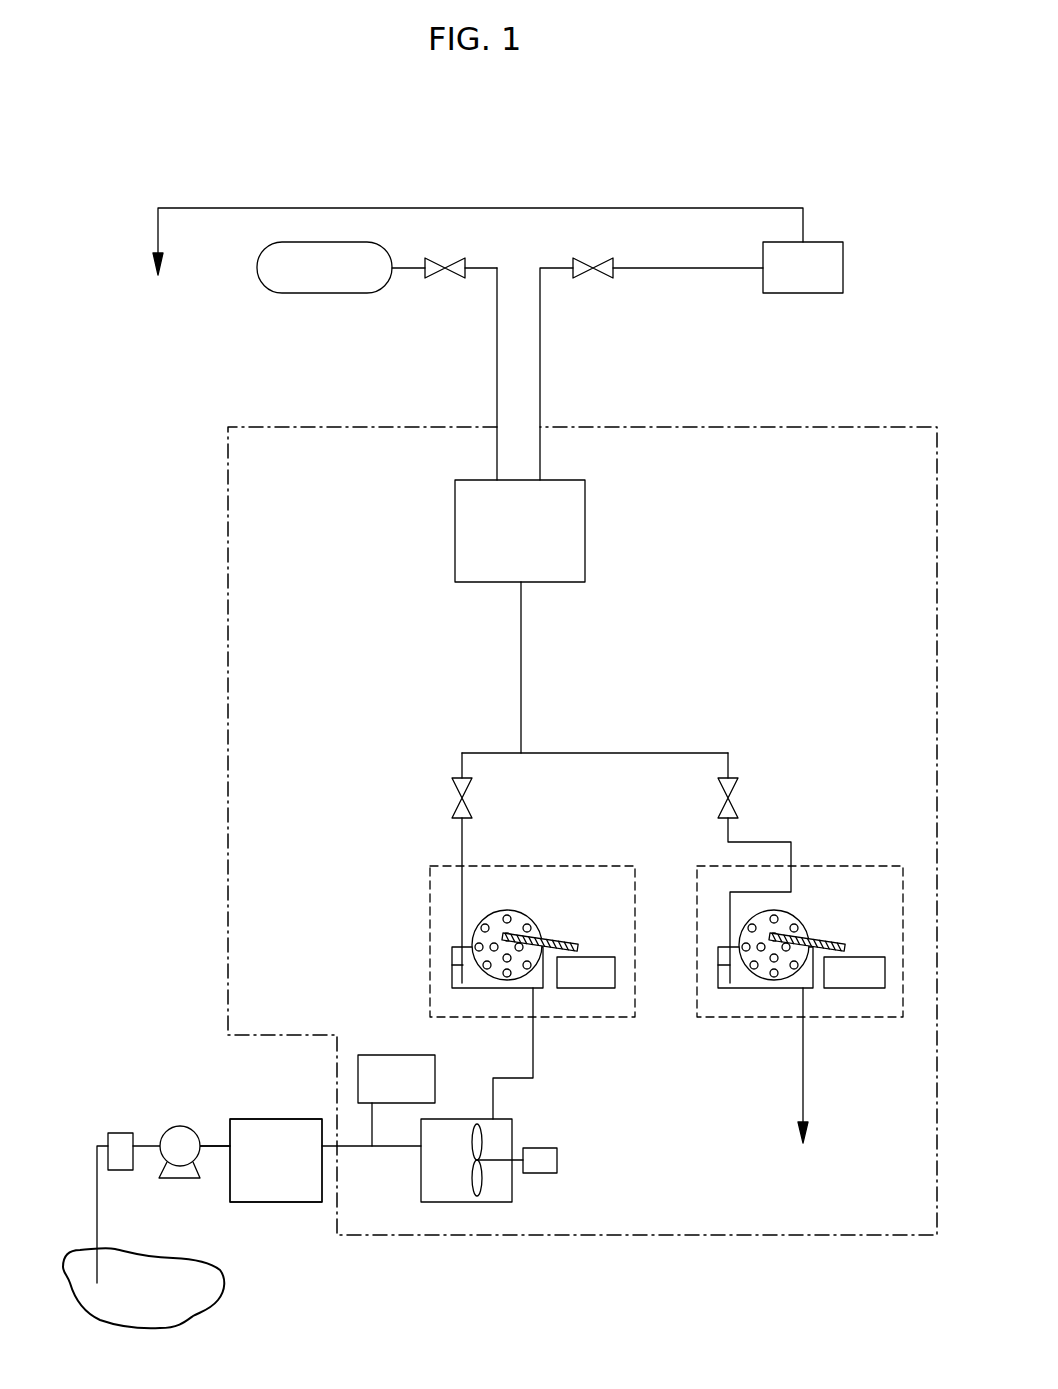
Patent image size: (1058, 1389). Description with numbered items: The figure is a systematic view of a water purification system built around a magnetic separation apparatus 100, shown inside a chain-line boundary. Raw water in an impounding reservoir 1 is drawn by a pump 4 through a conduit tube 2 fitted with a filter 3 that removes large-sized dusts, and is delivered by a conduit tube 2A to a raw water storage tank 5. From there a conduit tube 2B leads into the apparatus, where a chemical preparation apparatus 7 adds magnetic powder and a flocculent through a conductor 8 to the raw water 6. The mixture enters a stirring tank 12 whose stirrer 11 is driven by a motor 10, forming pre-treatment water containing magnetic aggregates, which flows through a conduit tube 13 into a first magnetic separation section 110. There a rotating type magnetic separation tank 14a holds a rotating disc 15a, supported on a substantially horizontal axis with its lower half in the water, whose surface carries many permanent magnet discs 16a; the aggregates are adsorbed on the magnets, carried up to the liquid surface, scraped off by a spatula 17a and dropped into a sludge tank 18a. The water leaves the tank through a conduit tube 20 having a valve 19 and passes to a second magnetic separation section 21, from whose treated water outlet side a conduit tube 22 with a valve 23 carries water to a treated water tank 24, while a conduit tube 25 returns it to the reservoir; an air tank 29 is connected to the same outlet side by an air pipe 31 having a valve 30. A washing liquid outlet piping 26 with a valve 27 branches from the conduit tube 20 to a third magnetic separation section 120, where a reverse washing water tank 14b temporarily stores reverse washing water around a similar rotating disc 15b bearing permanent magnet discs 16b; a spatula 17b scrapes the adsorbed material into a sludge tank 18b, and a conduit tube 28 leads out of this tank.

The impounding reservoir 1 is at (225, 1283).
The conduit tube 2 is at (97, 1218).
The conduit tube 2A is at (213, 1145).
The conduit tube 2B is at (393, 1150).
The filter 3 is at (122, 1133).
The pump 4 is at (175, 1128).
The raw water storage tank 5 is at (275, 1203).
The raw water 6 is at (265, 1125).
The chemical preparation apparatus 7 is at (388, 1055).
The conductor 8 is at (372, 1125).
The motor 10 is at (557, 1160).
The stirrer 11 is at (482, 1135).
The stirring tank 12 is at (507, 1185).
The conduit tube 13 is at (533, 1063).
The rotating type magnetic separation tank 14a is at (452, 977).
The reverse washing water tank 14b is at (718, 968).
The rotating disc 15a is at (540, 900).
The rotating disc 15b is at (785, 915).
The permanent magnet discs 16a is at (482, 926).
The permanent magnet discs 16b is at (749, 926).
The spatula 17a is at (586, 924).
The spatula 17b is at (856, 924).
The sludge tank 18a is at (590, 988).
The sludge tank 18b is at (851, 988).
The valve 19 is at (455, 797).
The conduit tube 20 is at (521, 625).
The second magnetic separation section 21 is at (585, 507).
The conduit tube 22 is at (682, 268).
The valve 23 is at (601, 254).
The treated water tank 24 is at (808, 293).
The conduit tube 25 is at (331, 208).
The washing liquid outlet piping 26 is at (622, 753).
The valve 27 is at (735, 801).
The conduit tube 28 is at (803, 1050).
The air tank 29 is at (258, 268).
The valve 30 is at (453, 258).
The air pipe 31 is at (497, 350).
The magnetic separation apparatus 100 is at (196, 560).
The first magnetic separation section 110 is at (550, 866).
The third magnetic separation section 120 is at (838, 866).